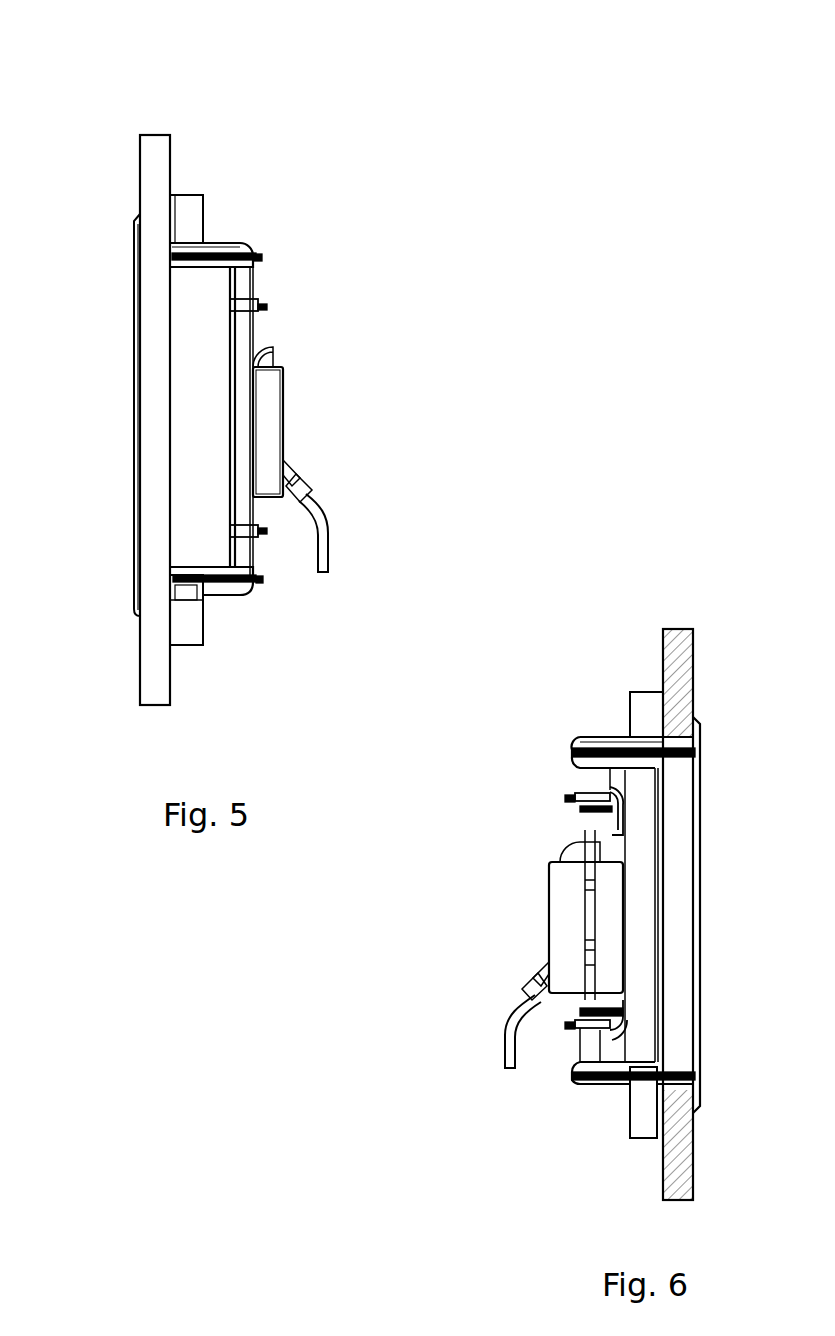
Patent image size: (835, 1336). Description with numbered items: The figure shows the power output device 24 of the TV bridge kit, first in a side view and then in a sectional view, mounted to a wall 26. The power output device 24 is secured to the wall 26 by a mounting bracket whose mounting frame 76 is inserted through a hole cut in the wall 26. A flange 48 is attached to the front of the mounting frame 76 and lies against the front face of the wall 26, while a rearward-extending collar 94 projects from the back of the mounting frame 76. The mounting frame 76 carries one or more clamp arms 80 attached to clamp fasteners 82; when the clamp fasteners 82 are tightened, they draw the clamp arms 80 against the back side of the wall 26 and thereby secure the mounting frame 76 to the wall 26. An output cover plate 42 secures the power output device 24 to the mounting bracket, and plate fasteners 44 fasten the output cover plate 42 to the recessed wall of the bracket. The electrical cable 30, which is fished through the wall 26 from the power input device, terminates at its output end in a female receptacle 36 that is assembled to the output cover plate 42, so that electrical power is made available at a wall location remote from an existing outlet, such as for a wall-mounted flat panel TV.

In FIG. 5, the power output device 24 is at (385, 264).
In FIG. 6, the power output device 24 is at (505, 753).
In FIG. 5, the wall 26 is at (155, 706).
In FIG. 6, the wall 26 is at (678, 628).
In FIG. 5, the electrical cable 30 is at (330, 550).
In FIG. 6, the electrical cable 30 is at (505, 1045).
In FIG. 5, the female receptacle 36 is at (285, 407).
In FIG. 6, the female receptacle 36 is at (547, 916).
In FIG. 6, the output cover plate 42 is at (625, 795).
In FIG. 6, the plate fasteners 44 is at (625, 1013).
In FIG. 5, the flange 48 is at (135, 617).
In FIG. 5, the mounting frame 76 is at (218, 598).
In FIG. 6, the mounting frame 76 is at (593, 737).
In FIG. 5, the clamp arms 80 is at (205, 217).
In FIG. 6, the clamp arms 80 is at (630, 713).
In FIG. 5, the clamp fasteners 82 is at (260, 583).
In FIG. 5, the rearward-extending collar 94 is at (243, 330).